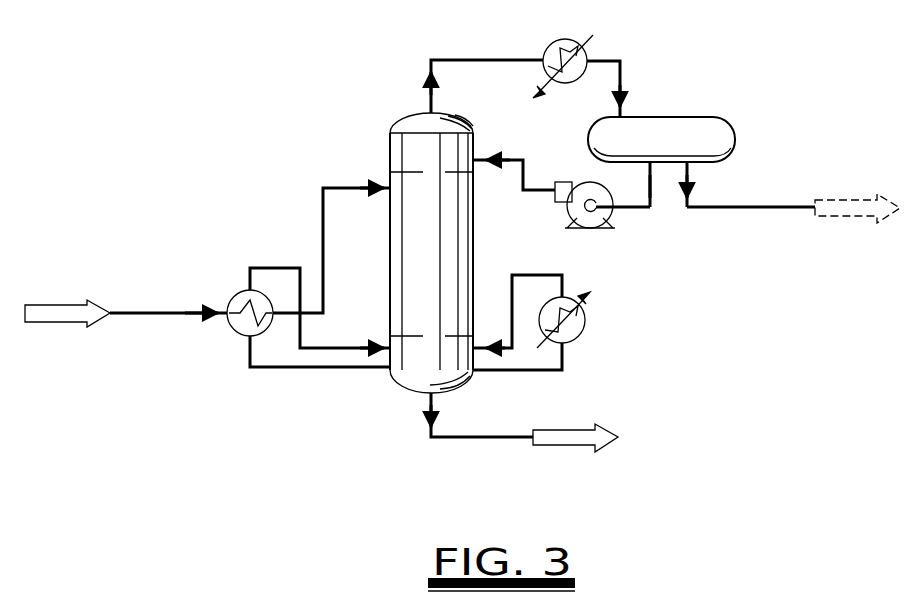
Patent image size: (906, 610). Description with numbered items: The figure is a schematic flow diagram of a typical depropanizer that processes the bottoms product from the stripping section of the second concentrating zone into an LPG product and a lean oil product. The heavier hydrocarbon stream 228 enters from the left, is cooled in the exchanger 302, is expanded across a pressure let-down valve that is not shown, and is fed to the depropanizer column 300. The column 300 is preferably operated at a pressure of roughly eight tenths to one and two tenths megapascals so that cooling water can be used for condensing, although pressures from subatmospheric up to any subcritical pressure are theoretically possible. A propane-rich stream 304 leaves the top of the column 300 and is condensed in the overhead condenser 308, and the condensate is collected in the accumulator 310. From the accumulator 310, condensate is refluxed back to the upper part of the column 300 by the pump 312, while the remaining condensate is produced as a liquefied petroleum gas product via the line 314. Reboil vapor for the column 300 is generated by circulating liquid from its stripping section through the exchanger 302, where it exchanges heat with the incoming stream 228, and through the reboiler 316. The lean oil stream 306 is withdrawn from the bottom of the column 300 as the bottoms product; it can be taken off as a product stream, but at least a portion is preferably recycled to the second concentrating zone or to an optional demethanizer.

The heavier hydrocarbon stream 228 is at (135, 313).
The depropanizer column 300 is at (395, 152).
The exchanger 302 is at (232, 330).
The propane-rich stream 304 is at (447, 58).
The lean oil stream 306 is at (485, 437).
The overhead condenser 308 is at (552, 45).
The accumulator 310 is at (695, 117).
The pump 312 is at (610, 228).
The line 314 is at (848, 205).
The reboiler 316 is at (586, 320).